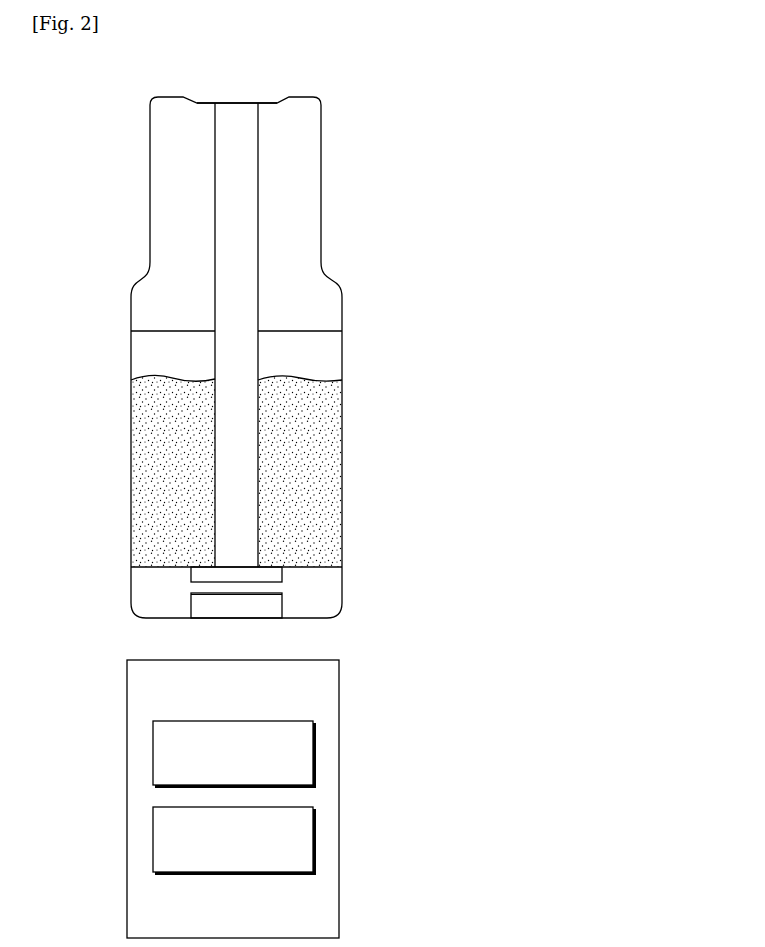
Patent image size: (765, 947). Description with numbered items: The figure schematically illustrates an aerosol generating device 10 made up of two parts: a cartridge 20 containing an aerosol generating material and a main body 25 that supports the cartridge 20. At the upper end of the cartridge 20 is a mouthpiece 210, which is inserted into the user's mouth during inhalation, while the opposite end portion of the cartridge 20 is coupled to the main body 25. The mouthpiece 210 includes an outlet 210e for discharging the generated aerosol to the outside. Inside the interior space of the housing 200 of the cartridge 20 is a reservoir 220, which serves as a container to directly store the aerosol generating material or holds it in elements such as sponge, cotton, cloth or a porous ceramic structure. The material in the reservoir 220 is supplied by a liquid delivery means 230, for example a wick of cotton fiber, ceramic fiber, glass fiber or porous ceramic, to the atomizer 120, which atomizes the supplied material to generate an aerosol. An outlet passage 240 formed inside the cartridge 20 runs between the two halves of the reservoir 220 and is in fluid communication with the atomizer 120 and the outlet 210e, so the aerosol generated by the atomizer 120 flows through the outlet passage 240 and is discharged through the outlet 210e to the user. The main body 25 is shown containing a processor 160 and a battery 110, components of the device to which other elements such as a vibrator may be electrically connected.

The aerosol generating device 10 is at (480, 60).
The cartridge 20 is at (96, 237).
The main body 25 is at (91, 725).
The housing 200 is at (348, 353).
The mouthpiece 210 is at (321, 172).
The outlet 210e is at (236, 101).
The reservoir 220 is at (330, 463).
The liquid delivery means 230 is at (276, 575).
The outlet passage 240 is at (236, 352).
The atomizer 120 is at (276, 604).
The processor 160 is at (316, 758).
The battery 110 is at (316, 843).